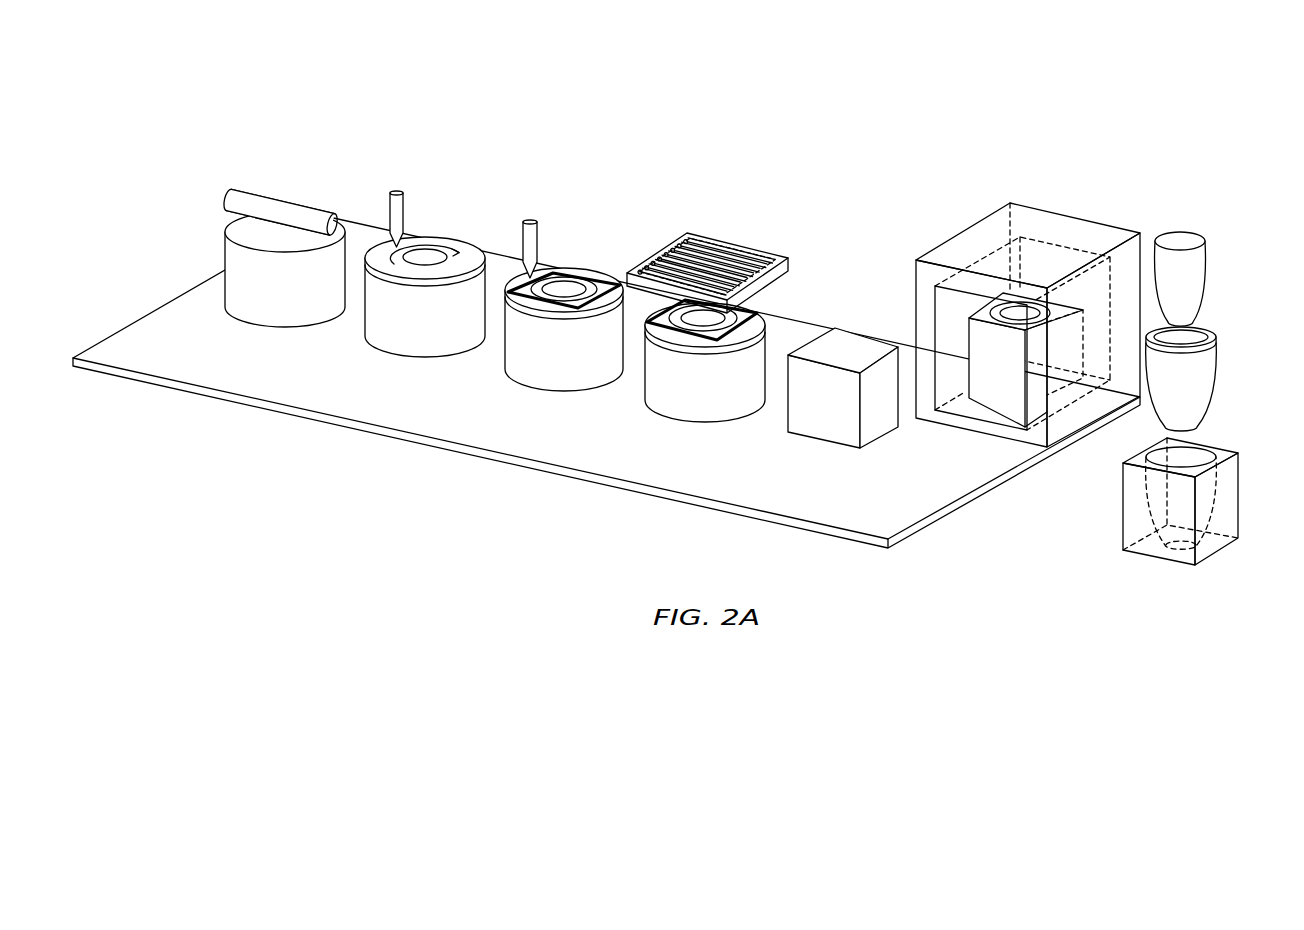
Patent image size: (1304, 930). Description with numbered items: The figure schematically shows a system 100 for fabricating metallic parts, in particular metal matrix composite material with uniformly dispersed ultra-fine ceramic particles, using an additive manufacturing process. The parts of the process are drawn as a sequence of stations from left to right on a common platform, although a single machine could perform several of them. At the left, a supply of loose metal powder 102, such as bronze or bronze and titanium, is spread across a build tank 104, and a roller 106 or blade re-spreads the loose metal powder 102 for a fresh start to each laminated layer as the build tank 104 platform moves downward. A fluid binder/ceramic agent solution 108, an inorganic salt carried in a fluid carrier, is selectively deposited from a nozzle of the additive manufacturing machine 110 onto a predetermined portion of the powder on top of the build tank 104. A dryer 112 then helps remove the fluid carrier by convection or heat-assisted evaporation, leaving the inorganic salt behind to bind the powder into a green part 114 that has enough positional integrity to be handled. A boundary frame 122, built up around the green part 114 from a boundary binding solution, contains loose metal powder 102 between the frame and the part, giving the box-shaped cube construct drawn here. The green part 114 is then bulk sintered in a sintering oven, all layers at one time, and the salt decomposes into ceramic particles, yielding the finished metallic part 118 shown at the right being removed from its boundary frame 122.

The system 100 is at (203, 84).
The loose metal powder 102 is at (236, 230).
The build tank 104 is at (298, 311).
The roller 106 is at (282, 205).
The fluid binder/ceramic agent solution 108 is at (397, 220).
The additive manufacturing machine 110 is at (603, 400).
The dryer 112 is at (730, 246).
The green part 114 is at (836, 333).
The metallic part 118 is at (1225, 385).
The boundary frame 122 is at (833, 430).